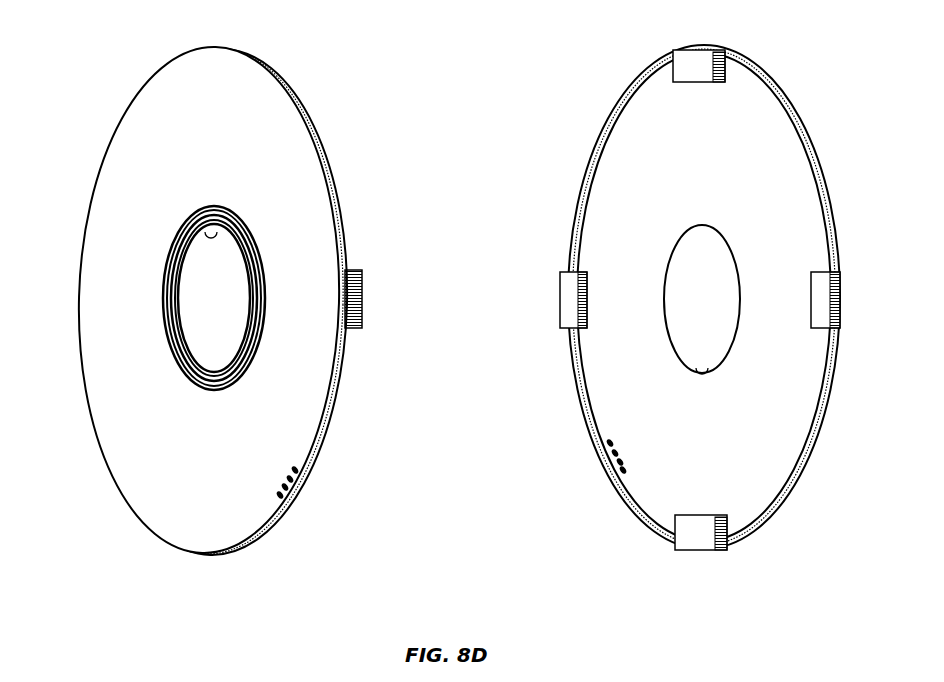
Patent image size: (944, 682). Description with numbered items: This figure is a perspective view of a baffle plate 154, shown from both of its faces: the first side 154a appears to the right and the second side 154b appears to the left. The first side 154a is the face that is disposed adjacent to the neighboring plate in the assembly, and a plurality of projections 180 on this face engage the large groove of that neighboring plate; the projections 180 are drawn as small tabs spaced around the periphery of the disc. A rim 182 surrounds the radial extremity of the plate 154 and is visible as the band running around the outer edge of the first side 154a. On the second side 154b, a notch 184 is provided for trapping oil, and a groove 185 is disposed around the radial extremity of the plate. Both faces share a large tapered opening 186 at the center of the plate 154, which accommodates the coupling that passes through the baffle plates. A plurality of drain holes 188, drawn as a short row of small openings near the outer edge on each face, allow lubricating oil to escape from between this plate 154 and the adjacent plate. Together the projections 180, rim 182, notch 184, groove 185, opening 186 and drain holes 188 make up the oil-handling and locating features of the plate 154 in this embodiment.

The plate 154 is at (114, 54).
The first side 154a is at (725, 183).
The second side 154b is at (238, 183).
The projections 180 is at (362, 297).
The rim 182 is at (760, 83).
The notch 184 is at (200, 392).
The groove 185 is at (203, 548).
The large tapered opening 186 is at (192, 222).
The drain holes 188 is at (277, 493).